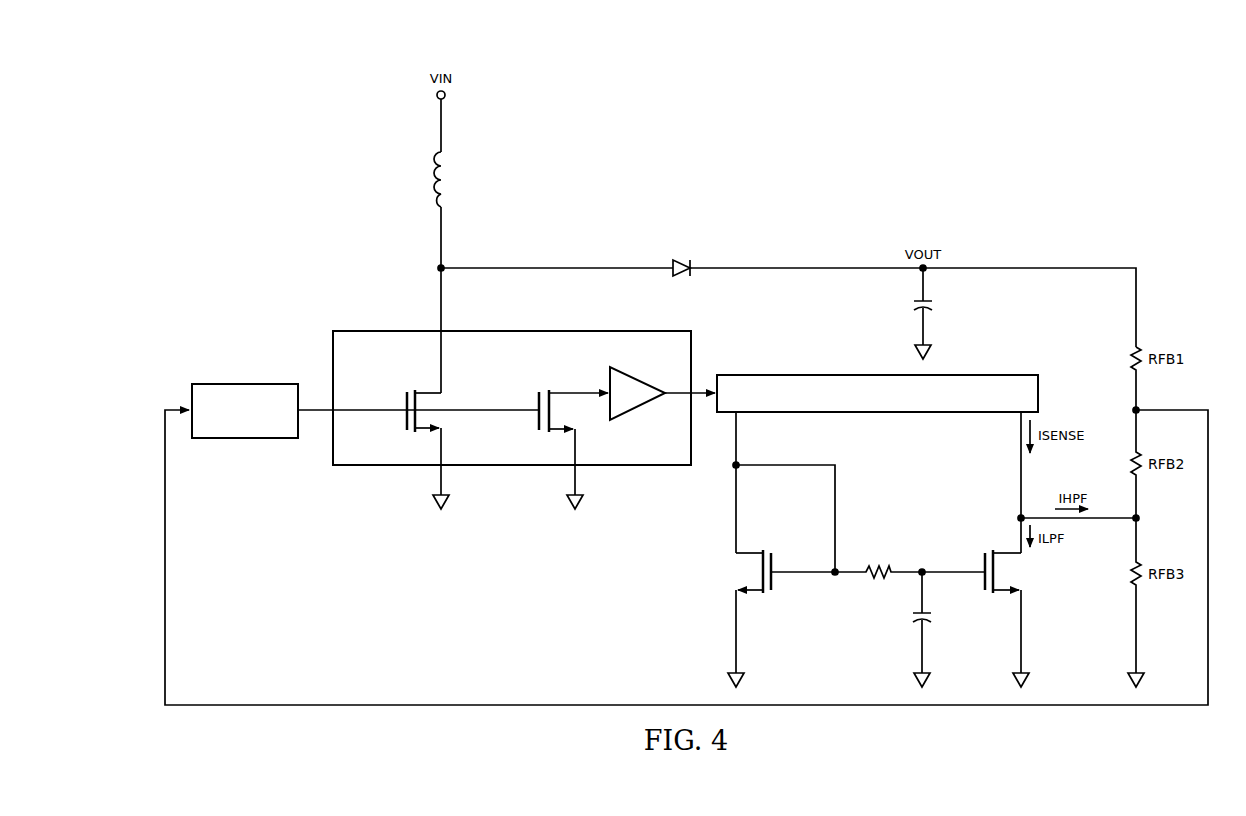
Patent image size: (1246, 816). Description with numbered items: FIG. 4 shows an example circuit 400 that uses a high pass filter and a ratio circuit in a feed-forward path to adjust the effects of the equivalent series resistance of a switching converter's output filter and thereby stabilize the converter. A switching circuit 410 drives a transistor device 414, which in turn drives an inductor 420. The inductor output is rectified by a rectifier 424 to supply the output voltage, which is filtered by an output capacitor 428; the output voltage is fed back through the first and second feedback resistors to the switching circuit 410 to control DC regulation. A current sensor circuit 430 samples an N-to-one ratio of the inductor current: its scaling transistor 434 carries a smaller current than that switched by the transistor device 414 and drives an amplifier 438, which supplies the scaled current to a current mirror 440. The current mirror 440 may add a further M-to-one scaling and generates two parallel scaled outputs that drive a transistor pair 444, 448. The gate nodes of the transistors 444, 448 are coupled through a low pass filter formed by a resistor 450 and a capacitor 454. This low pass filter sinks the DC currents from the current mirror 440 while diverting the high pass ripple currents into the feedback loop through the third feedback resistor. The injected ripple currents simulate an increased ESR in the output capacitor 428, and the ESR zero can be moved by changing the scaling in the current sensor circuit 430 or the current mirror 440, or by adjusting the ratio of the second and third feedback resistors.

The circuit 400 is at (1004, 77).
The switching circuit 410 is at (228, 383).
The transistor device 414 is at (406, 400).
The inductor 420 is at (428, 172).
The rectifier 424 is at (677, 259).
The output capacitor 428 is at (935, 305).
The current sensor circuit 430 is at (396, 329).
The scaling transistor 434 is at (538, 400).
The amplifier 438 is at (641, 380).
The current mirror 440 is at (1040, 383).
The transistor 444 is at (773, 582).
The transistor 448 is at (984, 566).
The resistor 450 is at (878, 579).
The capacitor 454 is at (935, 621).